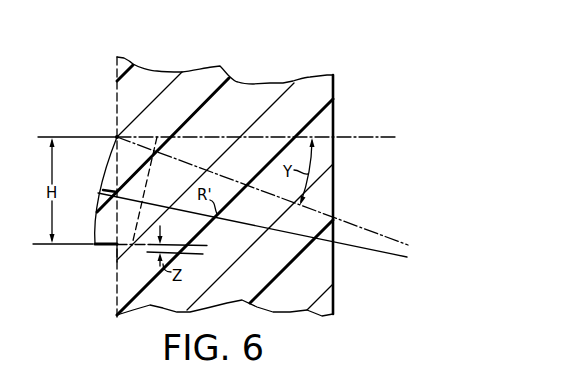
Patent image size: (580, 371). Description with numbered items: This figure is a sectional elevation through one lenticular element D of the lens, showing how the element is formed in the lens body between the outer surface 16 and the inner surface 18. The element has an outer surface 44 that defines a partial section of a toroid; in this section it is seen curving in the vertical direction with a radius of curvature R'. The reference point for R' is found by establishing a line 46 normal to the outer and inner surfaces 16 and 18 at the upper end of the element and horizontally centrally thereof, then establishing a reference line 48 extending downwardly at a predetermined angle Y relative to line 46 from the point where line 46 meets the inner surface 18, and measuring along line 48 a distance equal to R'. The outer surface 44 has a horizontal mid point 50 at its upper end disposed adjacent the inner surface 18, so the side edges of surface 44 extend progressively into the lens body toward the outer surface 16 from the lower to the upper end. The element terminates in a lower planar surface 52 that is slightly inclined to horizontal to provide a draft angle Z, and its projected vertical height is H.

The outer surface of the lens 16 is at (335, 88).
The inner surface of the lens 18 is at (117, 83).
The outer surface 44 is at (104, 176).
The line normal to outer and inner surfaces 46 is at (360, 136).
The reference line 48 is at (370, 231).
The horizontal mid point 50 is at (117, 137).
The lower planar surface 52 is at (100, 247).